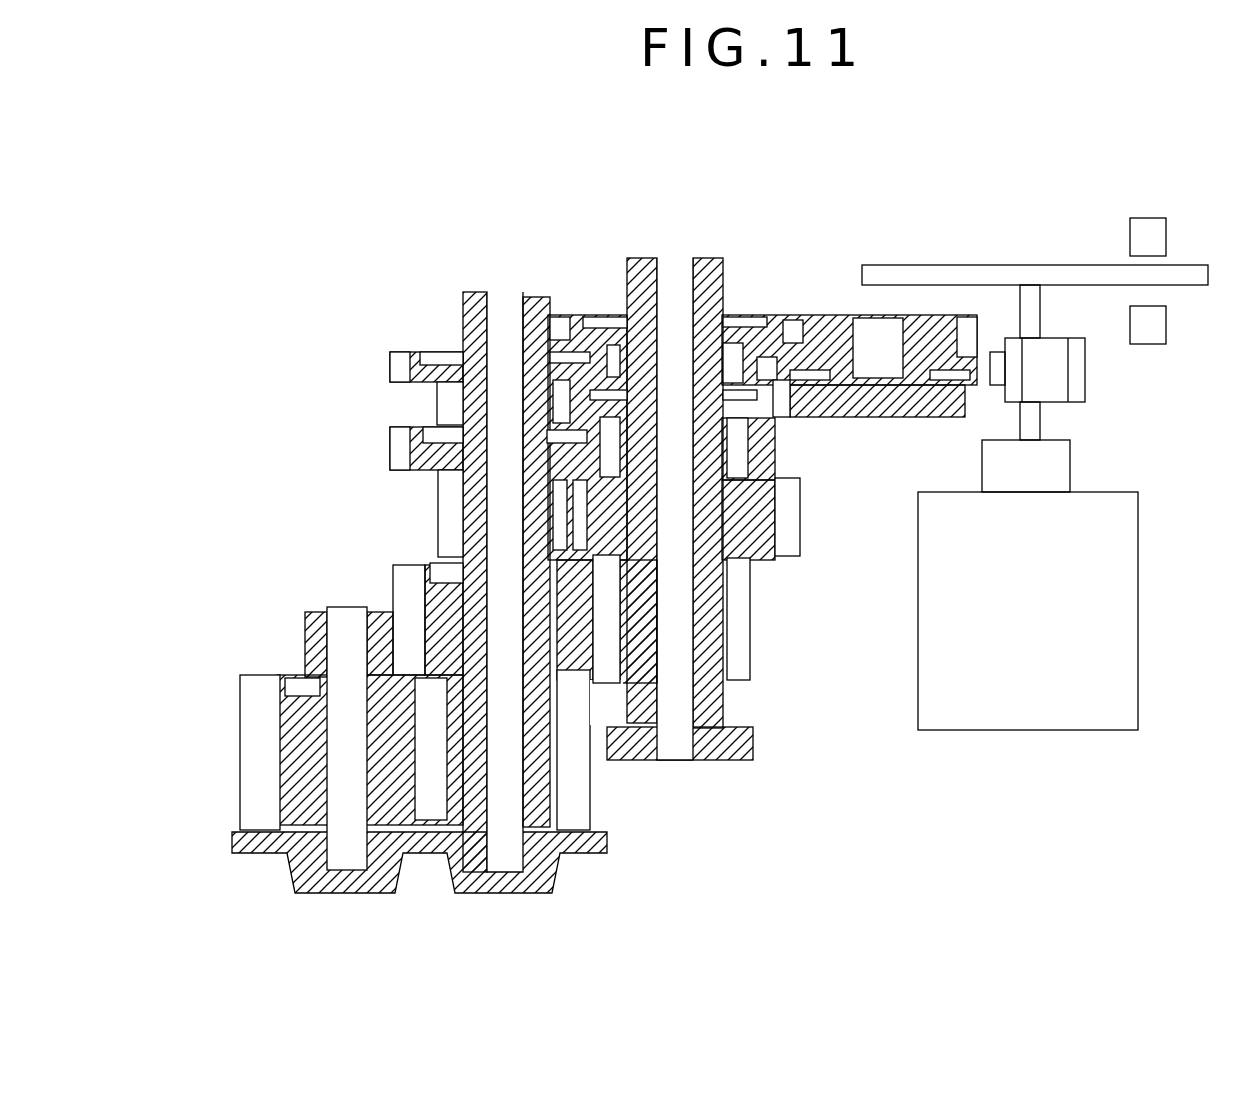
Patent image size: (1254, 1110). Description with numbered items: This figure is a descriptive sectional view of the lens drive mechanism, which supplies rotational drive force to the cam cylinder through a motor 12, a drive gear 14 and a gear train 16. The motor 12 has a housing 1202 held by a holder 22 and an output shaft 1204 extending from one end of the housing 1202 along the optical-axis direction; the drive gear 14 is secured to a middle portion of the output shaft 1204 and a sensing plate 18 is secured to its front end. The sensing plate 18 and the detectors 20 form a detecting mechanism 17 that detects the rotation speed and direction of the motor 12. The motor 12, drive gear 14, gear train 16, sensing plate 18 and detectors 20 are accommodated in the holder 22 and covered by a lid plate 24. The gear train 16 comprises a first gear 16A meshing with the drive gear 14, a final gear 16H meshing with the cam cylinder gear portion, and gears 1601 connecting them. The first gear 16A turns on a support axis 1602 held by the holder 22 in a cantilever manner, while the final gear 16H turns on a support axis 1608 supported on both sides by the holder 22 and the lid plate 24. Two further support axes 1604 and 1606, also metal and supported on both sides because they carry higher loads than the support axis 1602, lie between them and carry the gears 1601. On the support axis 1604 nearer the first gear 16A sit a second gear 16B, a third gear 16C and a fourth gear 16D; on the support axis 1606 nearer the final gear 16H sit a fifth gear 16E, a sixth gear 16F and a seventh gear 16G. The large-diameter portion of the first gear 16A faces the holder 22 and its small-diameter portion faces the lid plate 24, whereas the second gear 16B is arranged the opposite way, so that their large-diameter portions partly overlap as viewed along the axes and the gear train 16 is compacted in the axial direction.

The gear train 16 is at (248, 265).
The gears 1601 is at (378, 322).
The support axis 1606 is at (470, 300).
The lid plate 24 is at (462, 312).
The second gear 16B is at (576, 315).
The support axis 1604 is at (645, 258).
The first gear 16A is at (818, 315).
The support axis 1602 is at (850, 318).
The sensing plate 18 is at (903, 265).
The detecting mechanism 17 is at (1118, 200).
The detectors 20 is at (1166, 237).
The drive gear 14 is at (1085, 386).
The output shaft 1204 is at (1040, 428).
The motor 12 is at (1165, 522).
The housing 1202 is at (1138, 601).
The fifth gear 16E is at (437, 398).
The sixth gear 16F is at (438, 490).
The seventh gear 16G is at (385, 585).
The support axis 1608 is at (322, 625).
The final gear 16H is at (240, 705).
The third gear 16C is at (748, 442).
The fourth gear 16D is at (750, 606).
The holder 22 is at (960, 418).